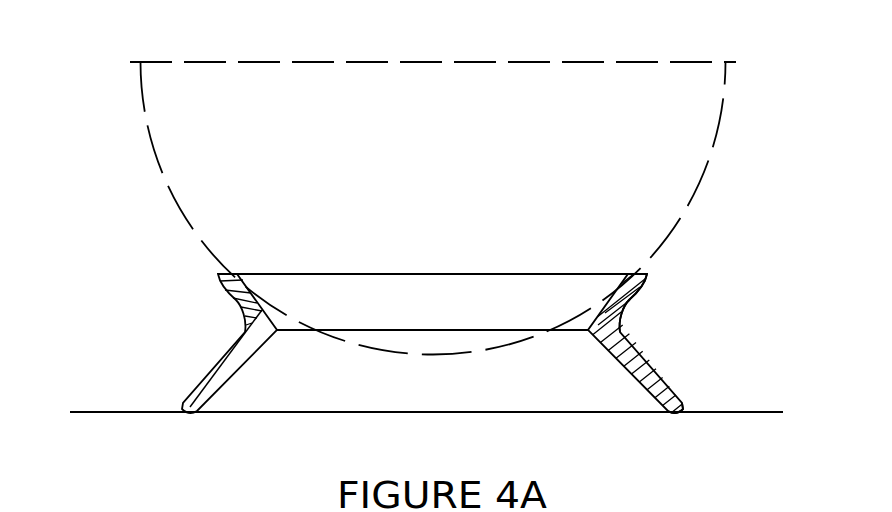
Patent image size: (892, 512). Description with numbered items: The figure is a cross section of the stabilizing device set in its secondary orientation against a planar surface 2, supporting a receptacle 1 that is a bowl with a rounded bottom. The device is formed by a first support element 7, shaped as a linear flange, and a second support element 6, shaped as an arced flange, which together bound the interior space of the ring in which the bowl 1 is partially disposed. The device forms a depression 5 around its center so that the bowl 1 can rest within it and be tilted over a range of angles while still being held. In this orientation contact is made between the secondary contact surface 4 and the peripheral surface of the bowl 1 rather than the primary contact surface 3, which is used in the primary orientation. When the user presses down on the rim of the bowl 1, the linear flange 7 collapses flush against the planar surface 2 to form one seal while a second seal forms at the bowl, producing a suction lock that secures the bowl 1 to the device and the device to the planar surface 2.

The receptacle 1 is at (358, 62).
The planar surface 2 is at (170, 412).
The primary contact surface 3 is at (253, 355).
The secondary contact surface 4 is at (272, 304).
The depression 5 is at (482, 330).
The second support element 6 is at (643, 283).
The first support element 7 is at (685, 410).